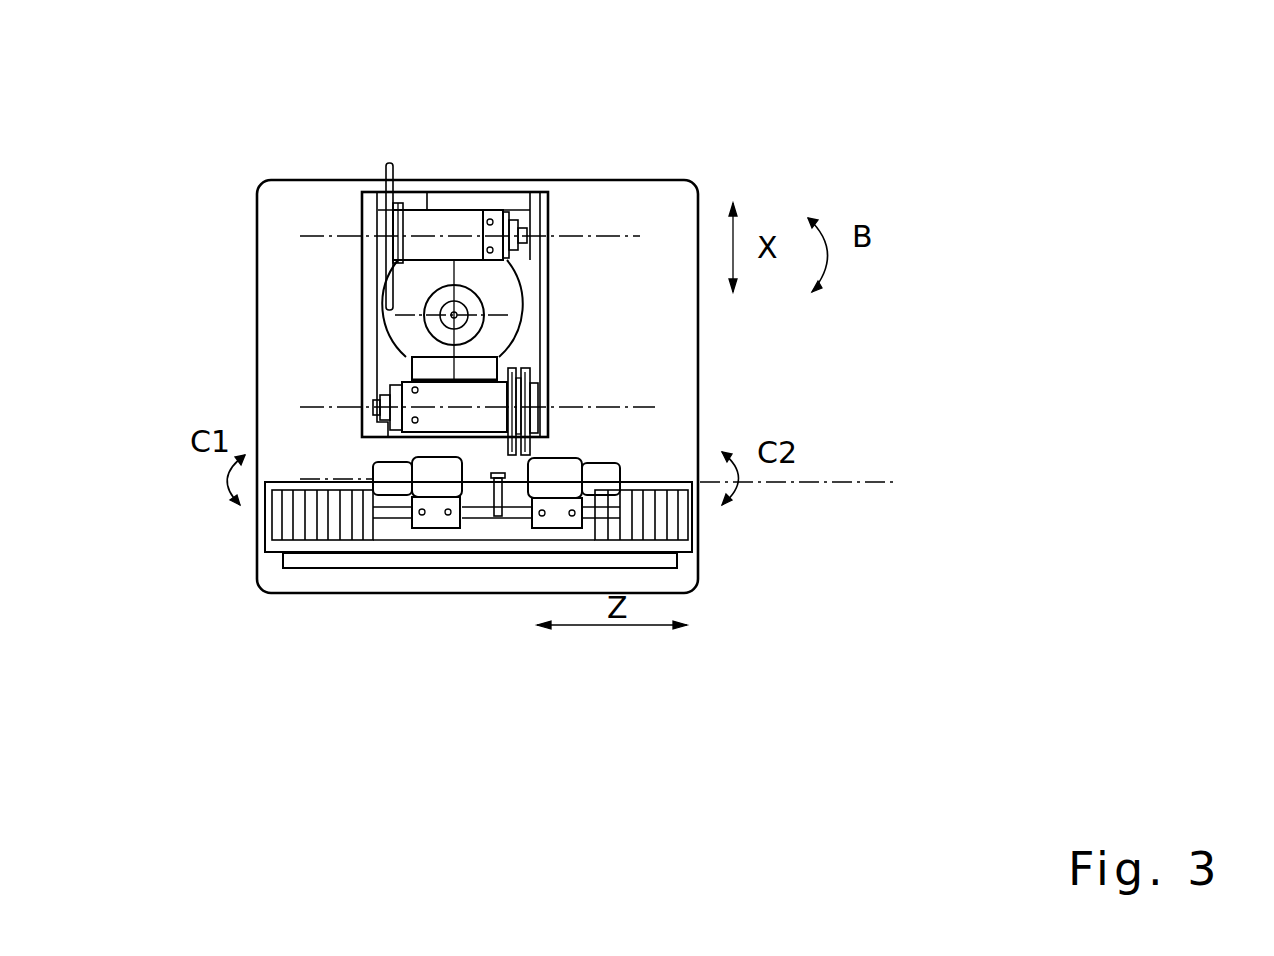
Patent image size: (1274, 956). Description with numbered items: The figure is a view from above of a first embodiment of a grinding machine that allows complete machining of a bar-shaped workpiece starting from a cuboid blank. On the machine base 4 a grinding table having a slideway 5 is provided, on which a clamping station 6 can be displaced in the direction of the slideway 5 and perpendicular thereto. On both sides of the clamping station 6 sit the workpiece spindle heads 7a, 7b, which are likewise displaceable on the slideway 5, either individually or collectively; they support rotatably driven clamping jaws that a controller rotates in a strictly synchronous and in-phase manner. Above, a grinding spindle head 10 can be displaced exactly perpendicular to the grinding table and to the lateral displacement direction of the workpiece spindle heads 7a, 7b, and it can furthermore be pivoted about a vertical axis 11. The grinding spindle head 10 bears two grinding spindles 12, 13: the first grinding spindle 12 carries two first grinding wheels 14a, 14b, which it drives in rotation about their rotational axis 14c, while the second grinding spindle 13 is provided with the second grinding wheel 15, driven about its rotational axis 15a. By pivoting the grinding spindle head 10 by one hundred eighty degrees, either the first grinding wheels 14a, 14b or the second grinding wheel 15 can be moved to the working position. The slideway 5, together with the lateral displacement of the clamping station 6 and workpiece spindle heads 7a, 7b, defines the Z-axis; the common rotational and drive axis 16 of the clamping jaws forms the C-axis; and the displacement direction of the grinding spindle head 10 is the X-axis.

The machine base 4 is at (658, 213).
The slideway 5 is at (577, 515).
The clamping station 6 is at (502, 520).
The workpiece spindle head 7a is at (422, 514).
The workpiece spindle head 7b is at (572, 514).
The grinding spindle head 10 is at (368, 248).
The vertical axis 11 is at (448, 313).
The first grinding spindle 12 is at (430, 393).
The second grinding spindle 13 is at (449, 222).
The first grinding wheel 14a is at (510, 358).
The first grinding wheel 14b is at (500, 362).
The rotational axis 14c is at (545, 405).
The second grinding wheel 15 is at (388, 205).
The rotational axis 15a is at (470, 233).
The common rotational and drive axis 16 is at (635, 477).